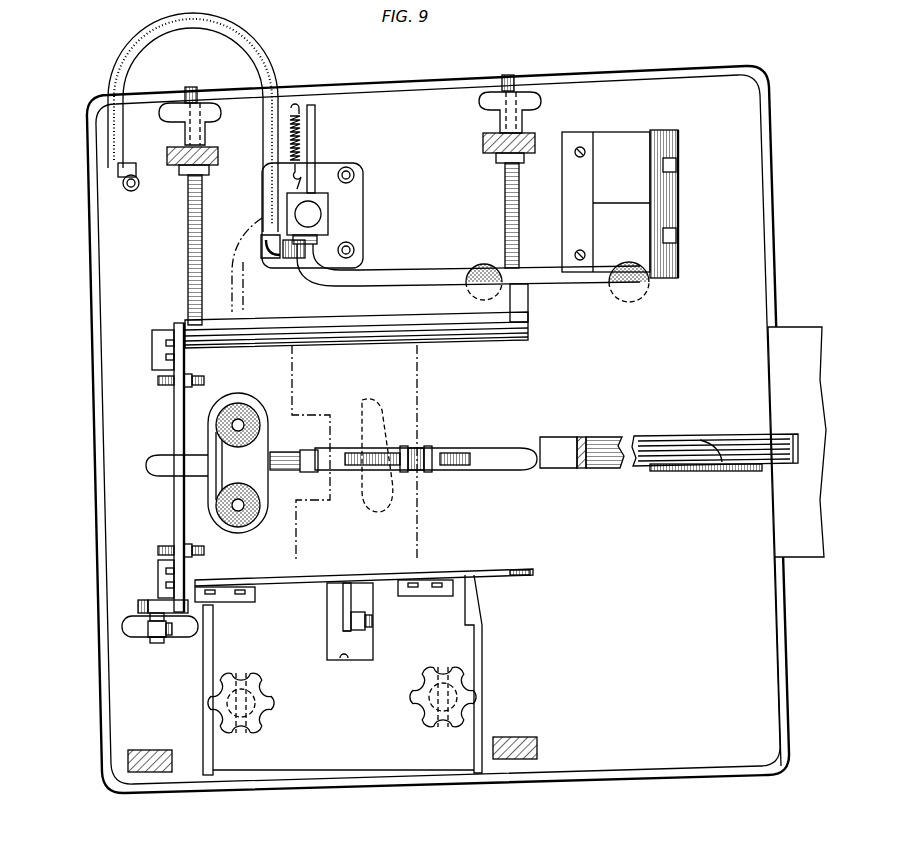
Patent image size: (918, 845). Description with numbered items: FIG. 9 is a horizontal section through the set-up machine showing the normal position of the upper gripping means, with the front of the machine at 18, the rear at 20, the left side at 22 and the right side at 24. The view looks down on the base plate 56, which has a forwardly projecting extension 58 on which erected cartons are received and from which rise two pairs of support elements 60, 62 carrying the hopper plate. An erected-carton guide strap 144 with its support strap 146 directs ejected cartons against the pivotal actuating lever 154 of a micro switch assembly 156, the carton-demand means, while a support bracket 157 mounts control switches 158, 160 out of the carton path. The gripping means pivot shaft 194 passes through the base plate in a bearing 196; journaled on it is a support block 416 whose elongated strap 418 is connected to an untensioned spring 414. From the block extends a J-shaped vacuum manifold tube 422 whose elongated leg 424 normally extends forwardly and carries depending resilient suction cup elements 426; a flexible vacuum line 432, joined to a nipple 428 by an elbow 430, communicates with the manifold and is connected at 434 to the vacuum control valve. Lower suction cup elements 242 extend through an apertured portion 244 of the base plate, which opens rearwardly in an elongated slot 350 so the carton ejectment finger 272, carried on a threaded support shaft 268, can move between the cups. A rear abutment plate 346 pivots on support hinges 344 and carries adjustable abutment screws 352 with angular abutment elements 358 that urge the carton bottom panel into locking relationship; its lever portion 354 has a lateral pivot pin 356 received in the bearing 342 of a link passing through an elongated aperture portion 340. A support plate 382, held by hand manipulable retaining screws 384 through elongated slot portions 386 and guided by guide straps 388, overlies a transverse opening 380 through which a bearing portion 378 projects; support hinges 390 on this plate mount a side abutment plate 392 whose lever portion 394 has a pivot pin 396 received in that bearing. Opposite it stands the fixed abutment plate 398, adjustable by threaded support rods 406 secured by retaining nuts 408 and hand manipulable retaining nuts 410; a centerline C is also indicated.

The front of the machine 18 is at (774, 198).
The rear of the machine 20 is at (90, 296).
The left side of the machine 22 is at (362, 788).
The right side of the machine 24 is at (430, 78).
The base plate 56 is at (660, 768).
The forwardly projecting extension 58 is at (792, 335).
The support elements 60 is at (150, 772).
The support elements 62 is at (213, 147).
The erected-carton guide strap 144 is at (560, 440).
The support strap 146 is at (600, 448).
The actuating lever 154 is at (664, 438).
The micro switch assembly 156 is at (712, 440).
The support bracket 157 is at (572, 180).
The control switch 158 is at (668, 148).
The control switch 160 is at (672, 222).
The gripping means pivot shaft 194 is at (330, 218).
The bearing 196 is at (362, 200).
The suction cup elements 242 is at (246, 408).
The apertured portion 244 is at (268, 415).
The threaded support shaft 268 is at (390, 472).
The carton ejectment finger 272 is at (312, 472).
The elongated aperture portion 340 is at (126, 633).
The bearing portion 342 is at (170, 637).
The support hinges 344 is at (152, 338).
The rear abutment plate 346 is at (174, 420).
The elongated slot 350 is at (156, 470).
The abutment screws 352 is at (158, 381).
The lever portion 354 is at (138, 606).
The lateral pivot pin 356 is at (154, 643).
The angular abutment element 358 is at (204, 380).
The bearing portion 378 is at (358, 632).
The transverse opening 380 is at (344, 658).
The support plate 382 is at (343, 747).
The retaining screws 384 is at (274, 705).
The elongated slot portions 386 is at (256, 720).
The guide straps 388 is at (484, 660).
The support hinges 390 is at (236, 602).
The side abutment plate 392 is at (505, 570).
The lever portion 394 is at (343, 605).
The pivot pin 396 is at (372, 624).
The fixed abutment plate 398 is at (492, 340).
The threaded support rods 406 is at (188, 218).
The retaining nuts 408 is at (183, 175).
The retaining nut 410 is at (205, 103).
The spring 414 is at (292, 110).
The support block 416 is at (320, 202).
The elongated strap 418 is at (316, 125).
The vacuum manifold tube 422 is at (385, 268).
The elongated leg 424 is at (432, 284).
The suction cup elements 426 is at (481, 262).
The nipple 428 is at (296, 258).
The elbow 430 is at (272, 258).
The flexible vacuum line 432 is at (252, 42).
The connection to vacuum control valve 434 is at (122, 183).
The centerline C is at (420, 392).